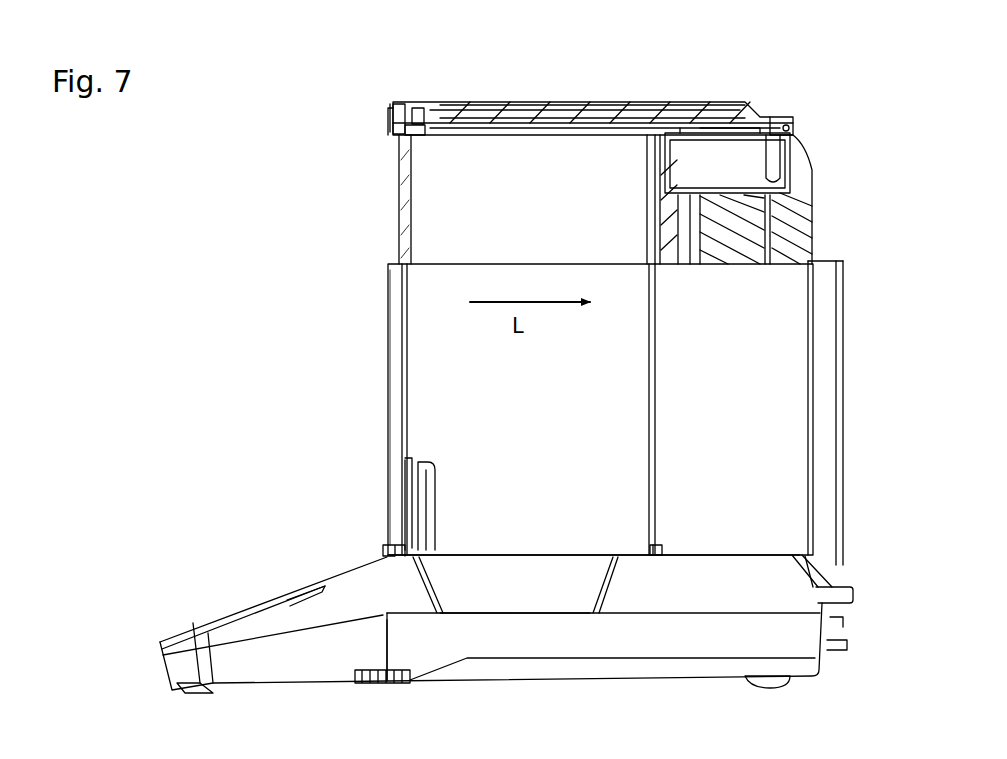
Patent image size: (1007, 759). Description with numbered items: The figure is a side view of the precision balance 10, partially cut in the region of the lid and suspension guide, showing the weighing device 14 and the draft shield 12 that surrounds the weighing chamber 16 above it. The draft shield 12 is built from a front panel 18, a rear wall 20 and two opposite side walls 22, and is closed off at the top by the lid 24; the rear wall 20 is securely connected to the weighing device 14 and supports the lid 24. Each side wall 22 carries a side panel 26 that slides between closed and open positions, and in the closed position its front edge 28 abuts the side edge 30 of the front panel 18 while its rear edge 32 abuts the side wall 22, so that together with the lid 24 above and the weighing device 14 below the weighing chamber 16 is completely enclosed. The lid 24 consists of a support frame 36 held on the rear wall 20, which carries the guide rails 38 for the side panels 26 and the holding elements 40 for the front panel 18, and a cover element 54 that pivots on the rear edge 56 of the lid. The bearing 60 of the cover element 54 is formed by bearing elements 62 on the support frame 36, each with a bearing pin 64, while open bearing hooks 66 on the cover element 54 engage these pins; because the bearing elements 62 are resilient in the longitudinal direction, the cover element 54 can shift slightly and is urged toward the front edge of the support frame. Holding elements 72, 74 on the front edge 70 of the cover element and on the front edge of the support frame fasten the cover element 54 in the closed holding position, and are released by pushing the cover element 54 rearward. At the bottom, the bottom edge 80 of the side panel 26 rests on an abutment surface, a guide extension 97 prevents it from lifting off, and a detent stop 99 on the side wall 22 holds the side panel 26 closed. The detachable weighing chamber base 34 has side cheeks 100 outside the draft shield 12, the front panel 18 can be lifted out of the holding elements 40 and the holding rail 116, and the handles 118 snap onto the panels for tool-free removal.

The precision balance 10 is at (655, 75).
The draft shield 12 is at (328, 302).
The weighing device 14 is at (310, 605).
The weighing chamber 16 is at (445, 215).
The front panel 18 is at (388, 392).
The rear wall 20 is at (840, 362).
The side wall 22 is at (788, 468).
The lid 24 is at (497, 103).
The side panel 26 is at (445, 495).
The front edge 28 is at (405, 442).
The side edge 30 is at (400, 349).
The rear edge 32 is at (652, 420).
The weighing chamber base 34 is at (520, 580).
The support frame 36 is at (705, 112).
The guide rail 38 is at (537, 118).
The holding element 40 is at (398, 105).
The cover element 54 is at (583, 105).
The rear edge 56 is at (783, 125).
The bearing 60 is at (822, 150).
The bearing element 62 is at (775, 142).
The bearing pin 64 is at (790, 123).
The bearing hook 66 is at (780, 118).
The front edge 70 is at (392, 125).
The holding element 72 is at (418, 115).
The holding element 74 is at (412, 127).
The bottom edge 80 is at (565, 556).
The guide extension 97 is at (655, 557).
The detent stop 99 is at (660, 548).
The side cheek 100 is at (475, 600).
The holding rail 116 is at (392, 555).
The handle 118 is at (440, 447).